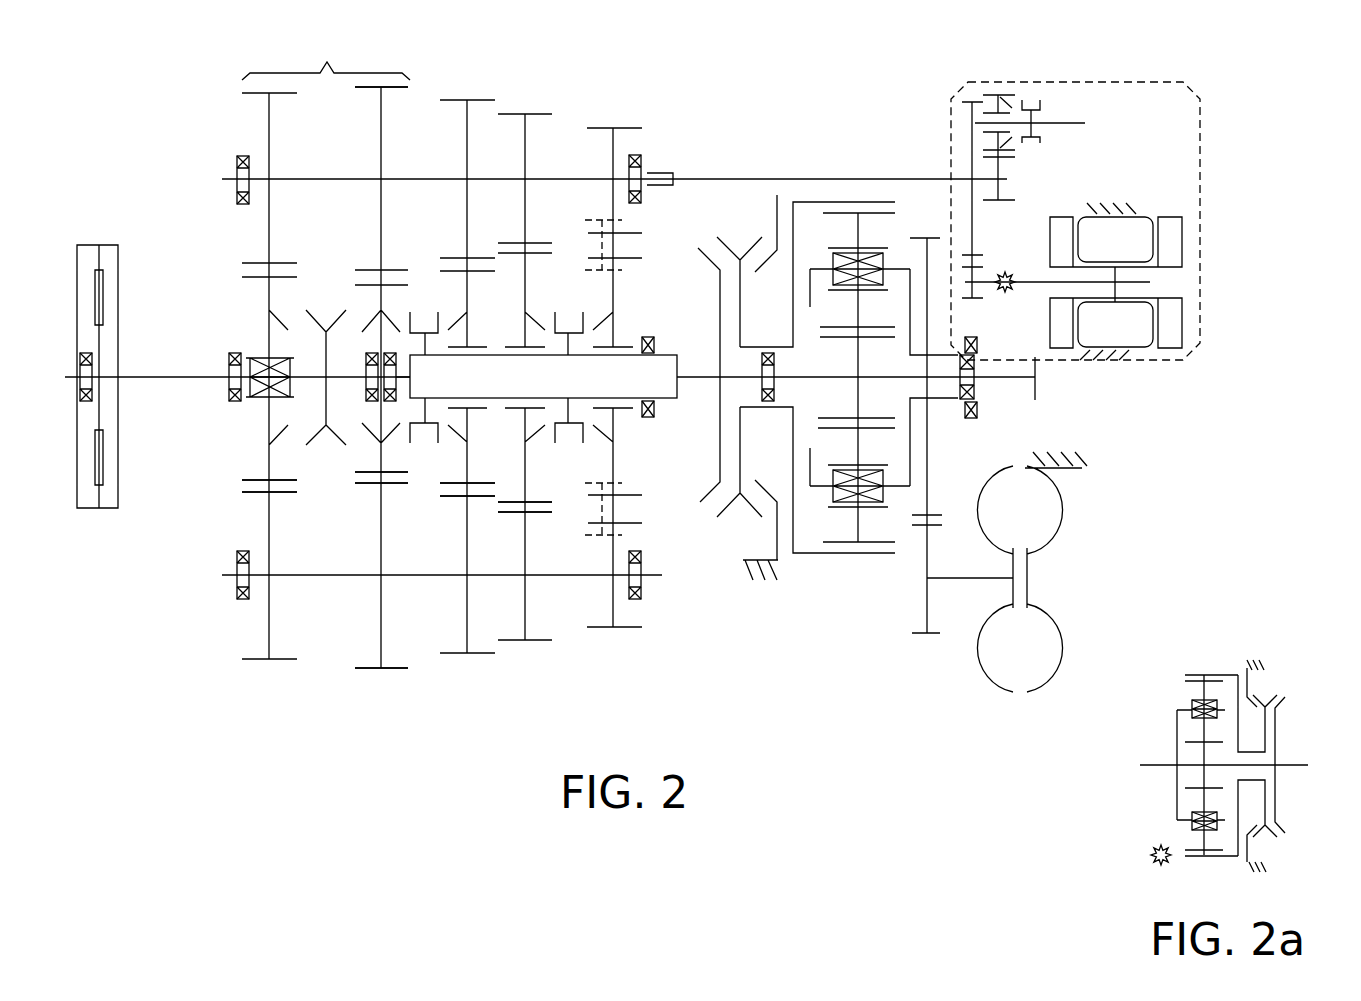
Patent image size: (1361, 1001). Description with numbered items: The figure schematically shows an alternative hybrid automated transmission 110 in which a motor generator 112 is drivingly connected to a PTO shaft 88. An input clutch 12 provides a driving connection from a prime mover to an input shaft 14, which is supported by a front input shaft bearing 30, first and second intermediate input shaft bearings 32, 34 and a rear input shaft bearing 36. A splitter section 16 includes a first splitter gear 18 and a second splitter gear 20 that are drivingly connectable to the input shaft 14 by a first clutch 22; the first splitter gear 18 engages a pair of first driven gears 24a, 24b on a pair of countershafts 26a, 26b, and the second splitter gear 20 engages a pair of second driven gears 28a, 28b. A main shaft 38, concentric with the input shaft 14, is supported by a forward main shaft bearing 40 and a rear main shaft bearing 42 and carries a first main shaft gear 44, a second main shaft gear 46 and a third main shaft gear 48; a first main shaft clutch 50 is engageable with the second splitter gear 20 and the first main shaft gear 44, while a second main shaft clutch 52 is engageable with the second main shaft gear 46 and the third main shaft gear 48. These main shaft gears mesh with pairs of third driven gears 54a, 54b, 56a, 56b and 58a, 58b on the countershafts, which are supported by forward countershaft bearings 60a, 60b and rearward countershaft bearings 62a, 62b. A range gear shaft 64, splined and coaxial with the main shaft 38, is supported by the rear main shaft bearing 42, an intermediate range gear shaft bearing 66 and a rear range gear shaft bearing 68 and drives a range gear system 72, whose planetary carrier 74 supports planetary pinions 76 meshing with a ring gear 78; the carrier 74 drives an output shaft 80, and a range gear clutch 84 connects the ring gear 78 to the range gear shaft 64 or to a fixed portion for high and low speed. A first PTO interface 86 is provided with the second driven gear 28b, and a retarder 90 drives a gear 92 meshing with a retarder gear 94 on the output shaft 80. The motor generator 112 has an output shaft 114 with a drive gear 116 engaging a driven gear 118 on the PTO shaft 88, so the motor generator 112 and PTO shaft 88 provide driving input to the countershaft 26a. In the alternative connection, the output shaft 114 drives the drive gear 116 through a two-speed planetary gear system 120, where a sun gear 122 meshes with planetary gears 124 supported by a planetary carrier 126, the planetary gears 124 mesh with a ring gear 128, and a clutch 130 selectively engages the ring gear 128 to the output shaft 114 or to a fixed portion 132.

In FIG. 2, the input clutch 12 is at (82, 543).
In FIG. 2, the input shaft 14 is at (192, 375).
In FIG. 2, the splitter section 16 is at (326, 58).
In FIG. 2, the first splitter gear 18 is at (268, 460).
In FIG. 2, the second splitter gear 20 is at (383, 453).
In FIG. 2, the first clutch 22 is at (328, 260).
In FIG. 2, the first driven gear 24a is at (269, 137).
In FIG. 2, the first driven gear 24b is at (270, 617).
In FIG. 2, the countershaft 26a is at (397, 178).
In FIG. 2, the countershaft 26b is at (400, 577).
In FIG. 2, the second driven gear 28a is at (381, 118).
In FIG. 2, the second driven gear 28b is at (382, 637).
In FIG. 2, the front input shaft bearing 30 is at (92, 392).
In FIG. 2, the first intermediate input shaft bearing 32 is at (235, 403).
In FIG. 2, the second intermediate input shaft bearing 34 is at (262, 360).
In FIG. 2, the rear input shaft bearing 36 is at (368, 395).
In FIG. 2, the main shaft 38 is at (495, 355).
In FIG. 2, the forward main shaft bearing 40 is at (397, 390).
In FIG. 2, the rear main shaft bearing 42 is at (652, 336).
In FIG. 2, the first main shaft gear 44 is at (470, 457).
In FIG. 2, the second main shaft gear 46 is at (527, 477).
In FIG. 2, the third main shaft gear 48 is at (615, 463).
In FIG. 2, the first main shaft clutch 50 is at (430, 260).
In FIG. 2, the second main shaft clutch 52 is at (570, 272).
In FIG. 2, the third driven gear 54a is at (467, 118).
In FIG. 2, the third driven gear 54b is at (470, 638).
In FIG. 2, the third driven gear 56a is at (525, 146).
In FIG. 2, the third driven gear 56b is at (525, 618).
In FIG. 2, the third driven gear 58a is at (613, 140).
In FIG. 2, the third driven gear 58b is at (615, 615).
In FIG. 2, the forward countershaft bearing 60a is at (238, 160).
In FIG. 2, the forward countershaft bearing 60b is at (240, 597).
In FIG. 2, the rearward countershaft bearing 62a is at (643, 160).
In FIG. 2, the rearward countershaft bearing 62b is at (642, 593).
In FIG. 2, the range gear shaft 64 is at (848, 374).
In FIG. 2, the intermediate range gear shaft bearing 66 is at (768, 352).
In FIG. 2, the rear range gear shaft bearing 68 is at (960, 398).
In FIG. 2, the range gear system 72 is at (835, 604).
In FIG. 2, the planetary carrier 74 is at (910, 437).
In FIG. 2, the planetary pinions 76 is at (847, 215).
In FIG. 2, the ring gear 78 is at (856, 202).
In FIG. 2, the output shaft 80 is at (1007, 378).
In FIG. 2, the range gear clutch 84 is at (750, 192).
In FIG. 2, the first PTO interface 86 is at (349, 718).
In FIG. 2, the PTO shaft 88 is at (895, 178).
In FIG. 2, the retarder 90 is at (1003, 722).
In FIG. 2, the gear 92 is at (920, 635).
In FIG. 2, the retarder gear 94 is at (927, 495).
In FIG. 2, the hybrid automated transmission 110 is at (830, 108).
In FIG. 2, the motor generator 112 is at (1115, 181).
In FIG. 2, the output shaft 114 is at (1037, 280).
In FIG. 2a, the output shaft 114 is at (1290, 765).
In FIG. 2, the drive gear 116 is at (975, 300).
In FIG. 2, the driven gear 118 is at (970, 138).
In FIG. 2a, the 2-speed planetary gear system 120 is at (1222, 638).
In FIG. 2a, the sun gear 122 is at (1193, 783).
In FIG. 2a, the planetary gears 124 is at (1200, 697).
In FIG. 2a, the planetary carrier 126 is at (1177, 733).
In FIG. 2a, the ring gear 128 is at (1212, 672).
In FIG. 2a, the clutch 130 is at (1274, 670).
In FIG. 2a, the fixed portion 132 is at (1247, 863).